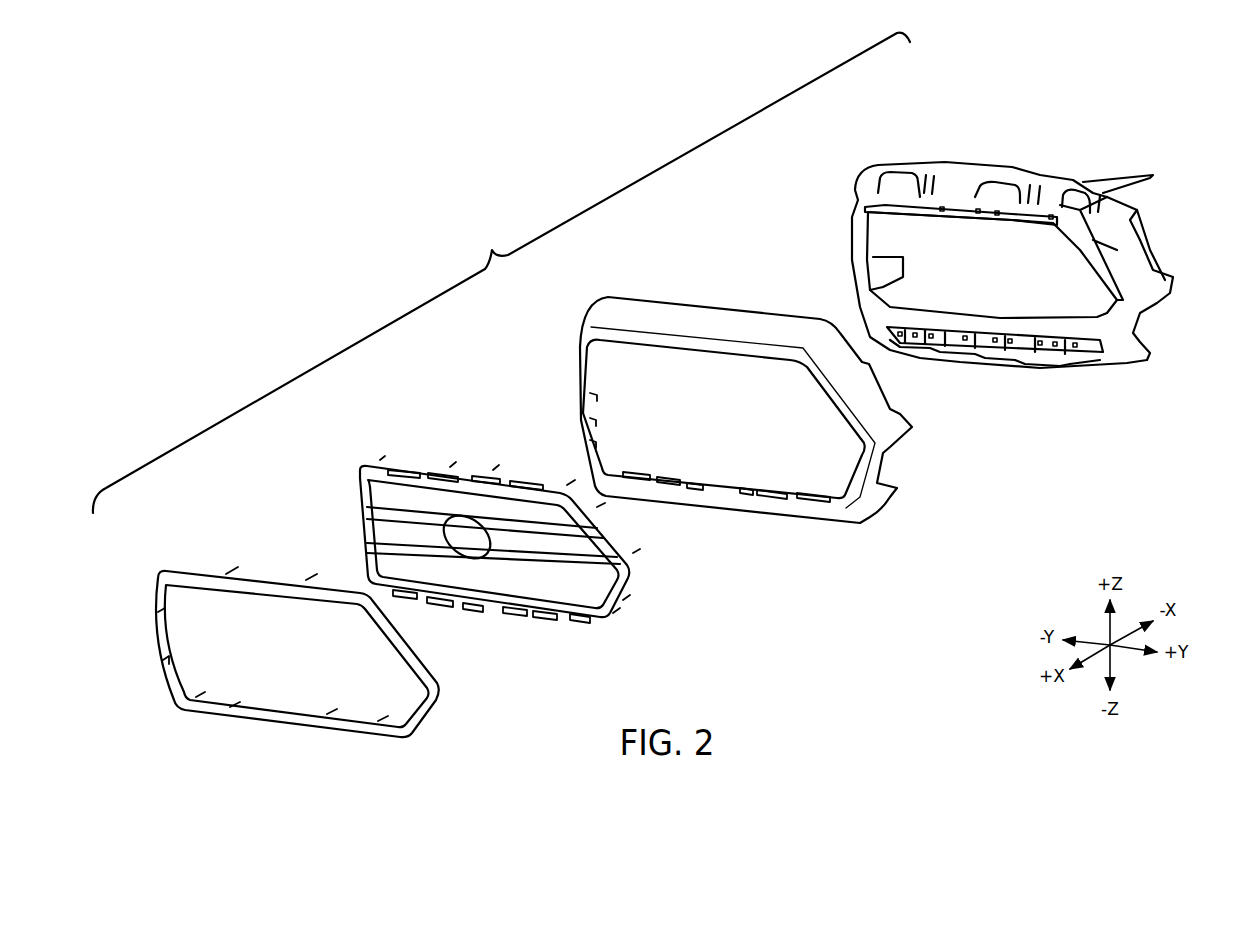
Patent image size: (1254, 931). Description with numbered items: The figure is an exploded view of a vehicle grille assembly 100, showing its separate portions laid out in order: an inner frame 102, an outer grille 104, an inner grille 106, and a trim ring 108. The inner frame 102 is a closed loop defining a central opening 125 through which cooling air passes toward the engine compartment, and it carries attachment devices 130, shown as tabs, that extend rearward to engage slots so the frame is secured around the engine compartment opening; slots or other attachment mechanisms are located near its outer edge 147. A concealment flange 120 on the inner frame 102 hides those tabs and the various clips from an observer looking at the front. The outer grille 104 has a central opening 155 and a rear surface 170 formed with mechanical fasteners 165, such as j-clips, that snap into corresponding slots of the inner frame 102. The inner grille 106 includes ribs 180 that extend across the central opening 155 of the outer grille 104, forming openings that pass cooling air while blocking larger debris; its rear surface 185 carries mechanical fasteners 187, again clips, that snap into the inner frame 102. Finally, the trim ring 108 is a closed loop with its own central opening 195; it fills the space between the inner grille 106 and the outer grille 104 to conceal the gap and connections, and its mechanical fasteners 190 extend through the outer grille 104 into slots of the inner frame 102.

The grille assembly 100 is at (501, 273).
The inner frame 102 is at (1004, 234).
The outer grille 104 is at (746, 371).
The inner grille 106 is at (481, 517).
The trim ring 108 is at (297, 618).
The concealment flange 120 is at (965, 313).
The central opening 125 is at (1052, 287).
The attachment devices 130 is at (1160, 172).
The outer edge 147 is at (850, 215).
The central opening 155 is at (755, 432).
The mechanical fasteners 165 is at (668, 478).
The rear surface 170 is at (652, 470).
The ribs 180 is at (388, 505).
The rear surface 185 is at (371, 460).
The mechanical fasteners 187 is at (440, 471).
The mechanical fasteners 190 is at (232, 570).
The central opening 195 is at (252, 648).